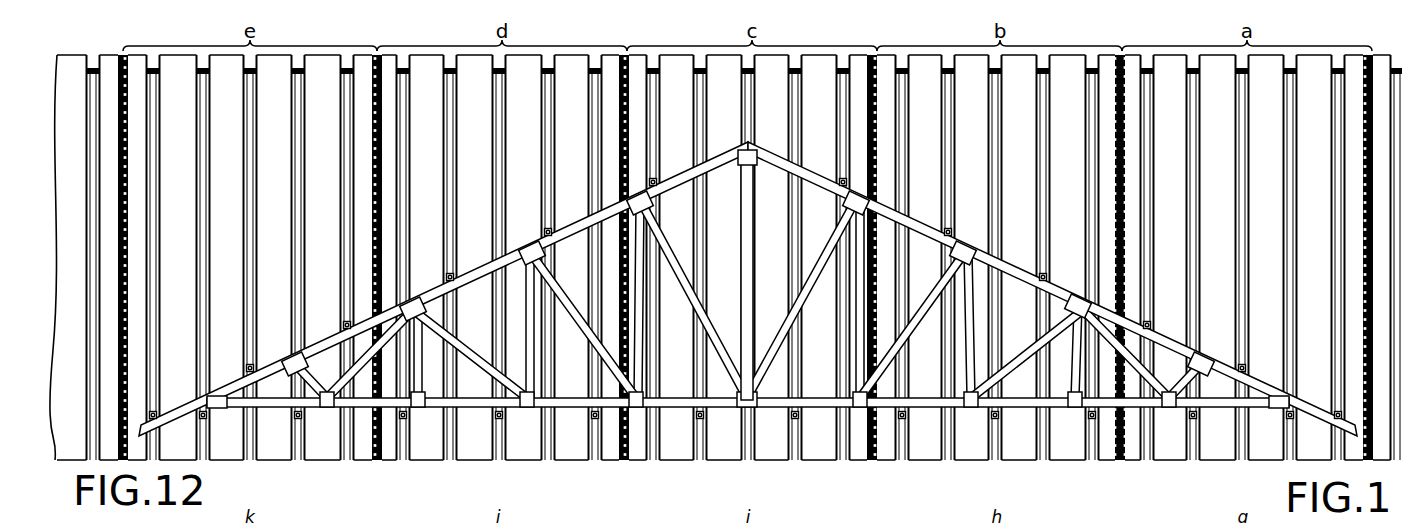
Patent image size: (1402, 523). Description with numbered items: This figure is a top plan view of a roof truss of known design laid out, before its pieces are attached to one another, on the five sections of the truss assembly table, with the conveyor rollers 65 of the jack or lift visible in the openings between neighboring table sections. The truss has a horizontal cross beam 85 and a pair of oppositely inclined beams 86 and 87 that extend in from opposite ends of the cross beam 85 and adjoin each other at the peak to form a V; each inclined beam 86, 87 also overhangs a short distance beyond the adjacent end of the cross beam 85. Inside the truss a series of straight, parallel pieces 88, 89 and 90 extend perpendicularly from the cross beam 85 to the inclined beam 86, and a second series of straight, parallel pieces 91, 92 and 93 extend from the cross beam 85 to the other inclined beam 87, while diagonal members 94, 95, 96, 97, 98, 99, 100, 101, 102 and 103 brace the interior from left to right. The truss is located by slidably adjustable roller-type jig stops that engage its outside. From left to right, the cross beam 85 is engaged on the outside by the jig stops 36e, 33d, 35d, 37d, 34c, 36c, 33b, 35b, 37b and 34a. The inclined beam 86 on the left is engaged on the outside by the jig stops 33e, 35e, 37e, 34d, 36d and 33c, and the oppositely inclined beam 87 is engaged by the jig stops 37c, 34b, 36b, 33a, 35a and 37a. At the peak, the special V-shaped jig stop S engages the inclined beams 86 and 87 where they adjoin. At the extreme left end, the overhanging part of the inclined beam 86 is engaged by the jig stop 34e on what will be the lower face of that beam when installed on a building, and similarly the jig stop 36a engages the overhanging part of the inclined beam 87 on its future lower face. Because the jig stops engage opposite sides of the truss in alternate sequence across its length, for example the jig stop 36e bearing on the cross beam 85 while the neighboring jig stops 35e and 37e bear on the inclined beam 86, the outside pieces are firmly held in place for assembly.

The conveyor rollers 65 is at (128, 250).
The special jig stop S is at (757, 150).
The cross beam 85 is at (805, 396).
The inclined beam 86 is at (481, 272).
The inclined beam 87 is at (1015, 271).
The straight parallel piece 88 is at (420, 375).
The straight parallel piece 89 is at (526, 305).
The straight parallel piece 90 is at (640, 323).
The straight parallel piece 91 is at (864, 243).
The straight parallel piece 92 is at (968, 315).
The straight parallel piece 93 is at (1073, 357).
The diagonal member 94 is at (315, 388).
The diagonal member 95 is at (385, 340).
The diagonal member 96 is at (482, 360).
The diagonal member 97 is at (561, 291).
The diagonal member 98 is at (668, 250).
The diagonal member 99 is at (826, 250).
The diagonal member 100 is at (933, 293).
The diagonal member 101 is at (1018, 356).
The diagonal member 102 is at (1140, 380).
The diagonal member 103 is at (1197, 370).
The jig stop 33e is at (155, 410).
The jig stop 34e is at (203, 420).
The jig stop 35e is at (248, 364).
The jig stop 36e is at (298, 420).
The jig stop 37e is at (343, 322).
The jig stop 33d is at (404, 422).
The jig stop 34d is at (449, 273).
The jig stop 35d is at (498, 420).
The jig stop 36d is at (546, 228).
The jig stop 37d is at (594, 420).
The jig stop 33c is at (656, 178).
The jig stop 34c is at (699, 420).
The jig stop 36c is at (794, 420).
The jig stop 37c is at (840, 178).
The jig stop 33b is at (903, 422).
The jig stop 34b is at (973, 218).
The jig stop 35b is at (995, 420).
The jig stop 36b is at (1046, 273).
The jig stop 37b is at (1091, 420).
The jig stop 33a is at (1165, 312).
The jig stop 34a is at (1192, 420).
The jig stop 35a is at (1244, 365).
The jig stop 36a is at (1290, 420).
The jig stop 37a is at (1337, 410).